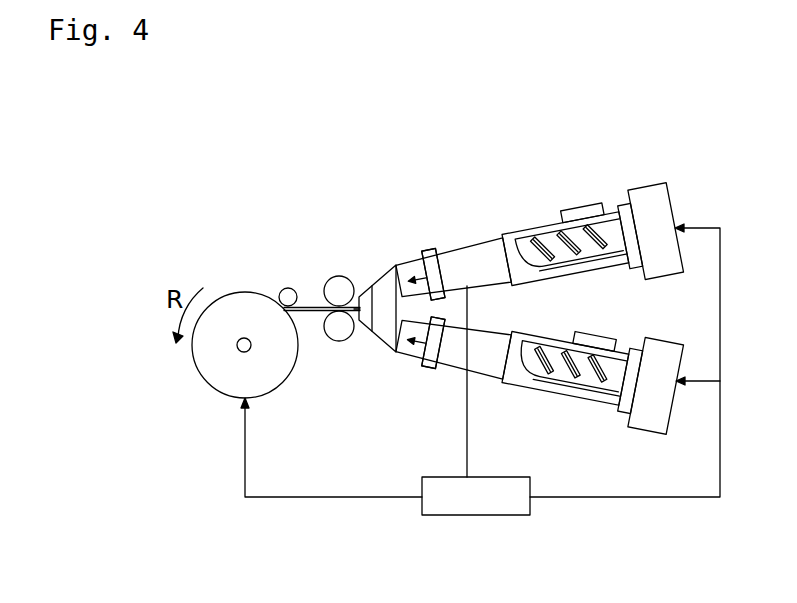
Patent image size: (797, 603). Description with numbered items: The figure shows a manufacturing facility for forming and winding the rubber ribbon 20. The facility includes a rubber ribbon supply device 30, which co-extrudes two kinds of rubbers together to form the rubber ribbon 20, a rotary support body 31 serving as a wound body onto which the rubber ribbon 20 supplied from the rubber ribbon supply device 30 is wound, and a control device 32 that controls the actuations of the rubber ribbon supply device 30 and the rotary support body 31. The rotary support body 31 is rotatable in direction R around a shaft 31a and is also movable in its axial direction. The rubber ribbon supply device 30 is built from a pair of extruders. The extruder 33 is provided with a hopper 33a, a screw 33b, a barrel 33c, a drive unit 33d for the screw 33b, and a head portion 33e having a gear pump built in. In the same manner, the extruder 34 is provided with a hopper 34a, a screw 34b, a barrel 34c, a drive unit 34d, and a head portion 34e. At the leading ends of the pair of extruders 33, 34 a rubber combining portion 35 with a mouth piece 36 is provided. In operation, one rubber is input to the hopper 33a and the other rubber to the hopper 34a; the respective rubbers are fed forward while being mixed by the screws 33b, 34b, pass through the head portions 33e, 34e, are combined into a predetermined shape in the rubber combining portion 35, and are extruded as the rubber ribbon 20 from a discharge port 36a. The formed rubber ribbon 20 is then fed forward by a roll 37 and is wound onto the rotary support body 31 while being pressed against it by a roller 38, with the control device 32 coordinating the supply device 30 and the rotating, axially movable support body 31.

The rubber ribbon 20 is at (308, 304).
The rubber ribbon supply device 30 is at (545, 306).
The rotary support body 31 is at (237, 296).
The shaft 31a is at (237, 347).
The control device 32 is at (468, 513).
The extruder 33 is at (469, 240).
The hopper 33a is at (588, 208).
The screw 33b is at (553, 243).
The barrel 33c is at (512, 236).
The drive unit 33d is at (650, 192).
The head portion 33e is at (404, 260).
The extruder 34 is at (489, 380).
The hopper 34a is at (594, 334).
The screw 34b is at (567, 372).
The barrel 34c is at (550, 334).
The drive unit 34d is at (668, 338).
The head portion 34e is at (410, 365).
The rubber combining portion 35 is at (386, 284).
The mouth piece 36 is at (343, 276).
The discharge port 36a is at (356, 322).
The roll 37 is at (340, 342).
The roller 38 is at (283, 290).